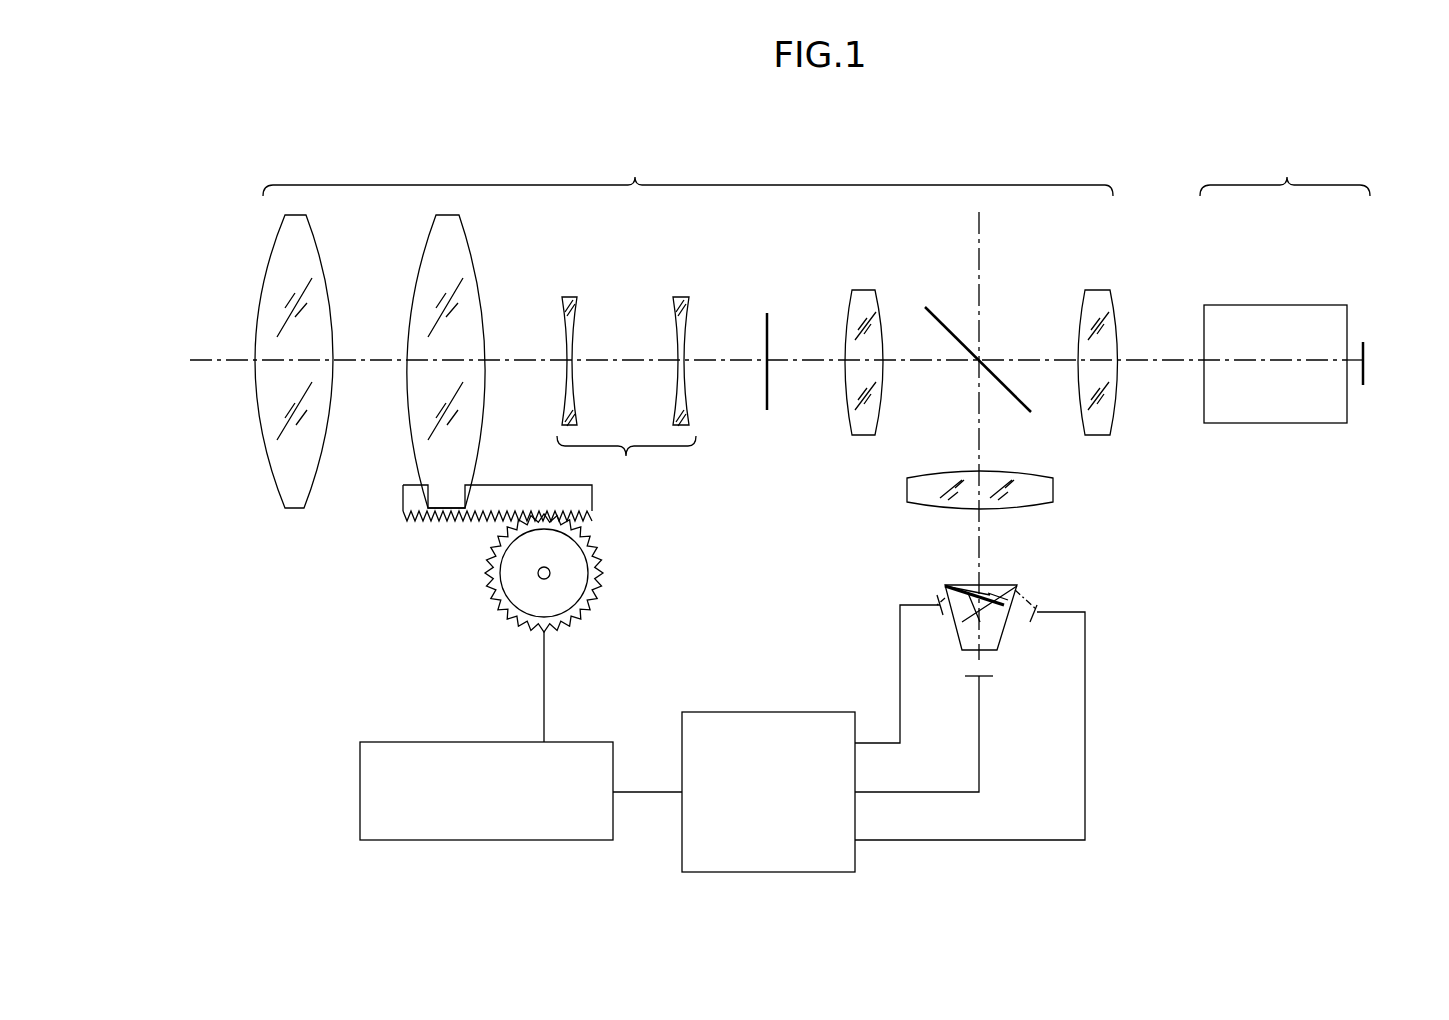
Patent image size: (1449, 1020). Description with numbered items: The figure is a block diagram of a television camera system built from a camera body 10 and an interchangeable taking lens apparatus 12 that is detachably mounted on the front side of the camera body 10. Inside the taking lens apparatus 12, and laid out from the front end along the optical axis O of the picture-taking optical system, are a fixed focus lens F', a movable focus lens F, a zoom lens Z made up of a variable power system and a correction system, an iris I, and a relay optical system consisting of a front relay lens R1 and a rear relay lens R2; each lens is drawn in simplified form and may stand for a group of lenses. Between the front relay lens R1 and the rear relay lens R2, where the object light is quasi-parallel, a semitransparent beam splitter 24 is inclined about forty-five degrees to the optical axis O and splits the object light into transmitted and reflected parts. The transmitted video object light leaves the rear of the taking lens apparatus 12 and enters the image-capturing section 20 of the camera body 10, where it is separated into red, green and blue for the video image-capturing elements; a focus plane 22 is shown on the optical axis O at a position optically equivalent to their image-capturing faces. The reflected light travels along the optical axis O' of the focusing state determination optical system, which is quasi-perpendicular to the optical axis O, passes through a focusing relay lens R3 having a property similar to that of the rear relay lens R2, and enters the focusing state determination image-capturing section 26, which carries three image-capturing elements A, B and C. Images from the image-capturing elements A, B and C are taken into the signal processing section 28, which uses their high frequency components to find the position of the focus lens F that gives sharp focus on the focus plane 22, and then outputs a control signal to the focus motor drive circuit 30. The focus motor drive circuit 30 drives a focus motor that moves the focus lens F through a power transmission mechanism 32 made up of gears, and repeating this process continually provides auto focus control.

The camera body 10 is at (1266, 170).
The taking lens apparatus 12 is at (688, 168).
The image-capturing section 20 is at (1340, 423).
The focus plane 22 is at (1365, 364).
The beam splitter 24 is at (965, 338).
The focusing state determination image-capturing section 26 is at (1000, 580).
The signal processing section 28 is at (755, 722).
The focus motor drive circuit 30 is at (522, 840).
The power transmission mechanism 32 is at (445, 580).
The optical axis O is at (208, 314).
The optical axis O' is at (914, 532).
The focus lens F is at (419, 365).
The fixed focus lens F' is at (294, 394).
The zoom lens Z is at (626, 394).
The iris I is at (768, 385).
The front relay lens R1 is at (860, 297).
The rear relay lens R2 is at (1093, 297).
The relay lens R3 is at (1053, 482).
The image-capturing element A is at (988, 678).
The image-capturing element B is at (935, 602).
The image-capturing element C is at (1038, 609).